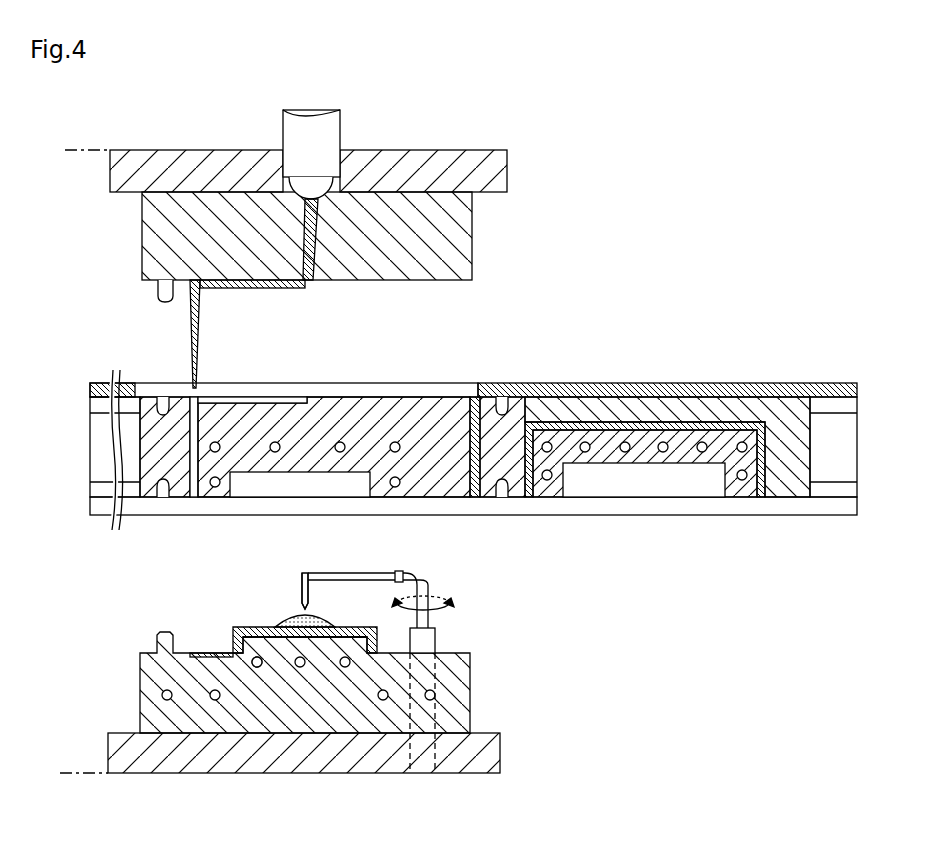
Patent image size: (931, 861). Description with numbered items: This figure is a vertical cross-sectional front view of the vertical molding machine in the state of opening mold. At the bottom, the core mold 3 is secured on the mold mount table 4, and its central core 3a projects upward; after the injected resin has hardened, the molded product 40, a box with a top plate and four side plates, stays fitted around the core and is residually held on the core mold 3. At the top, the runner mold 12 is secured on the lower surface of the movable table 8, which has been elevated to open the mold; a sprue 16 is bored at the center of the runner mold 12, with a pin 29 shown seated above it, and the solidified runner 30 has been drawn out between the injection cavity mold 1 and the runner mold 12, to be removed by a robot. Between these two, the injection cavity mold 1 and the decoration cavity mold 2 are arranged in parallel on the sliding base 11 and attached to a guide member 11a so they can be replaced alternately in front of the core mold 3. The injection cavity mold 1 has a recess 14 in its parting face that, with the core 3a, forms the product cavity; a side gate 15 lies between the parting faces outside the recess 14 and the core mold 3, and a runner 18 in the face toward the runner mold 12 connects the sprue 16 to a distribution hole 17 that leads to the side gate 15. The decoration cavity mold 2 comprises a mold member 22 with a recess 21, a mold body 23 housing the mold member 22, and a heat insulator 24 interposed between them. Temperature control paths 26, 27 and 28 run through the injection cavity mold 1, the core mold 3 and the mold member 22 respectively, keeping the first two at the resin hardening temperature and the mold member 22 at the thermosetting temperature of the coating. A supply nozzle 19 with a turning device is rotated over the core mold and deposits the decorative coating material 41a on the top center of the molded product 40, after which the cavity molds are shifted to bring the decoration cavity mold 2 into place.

The injection cavity mold 1 is at (336, 393).
The decoration cavity mold 2 is at (553, 390).
The core mold 3 is at (352, 715).
The core 3a is at (318, 645).
The mold mount table 4 is at (500, 773).
The movable table 8 is at (507, 150).
The sliding base 11 is at (495, 400).
The guide member 11a is at (102, 430).
The runner mold 12 is at (215, 222).
The recess 14 is at (320, 492).
The side gate 15 is at (200, 658).
The sprue 16 is at (317, 232).
The distribution hole 17 is at (197, 430).
The runner 18 is at (278, 400).
The supply nozzle 19 is at (305, 574).
The recess 21 is at (597, 480).
The mold member 22 is at (605, 440).
The mold body 23 is at (640, 410).
The heat insulator 24 is at (690, 428).
The temperature control path 26 is at (340, 442).
The temperature control path 27 is at (257, 668).
The temperature control path 28 is at (702, 452).
The press pin 29 is at (322, 135).
The runner 30 is at (190, 312).
The molded product 40 is at (290, 640).
The coating material 41a is at (290, 618).